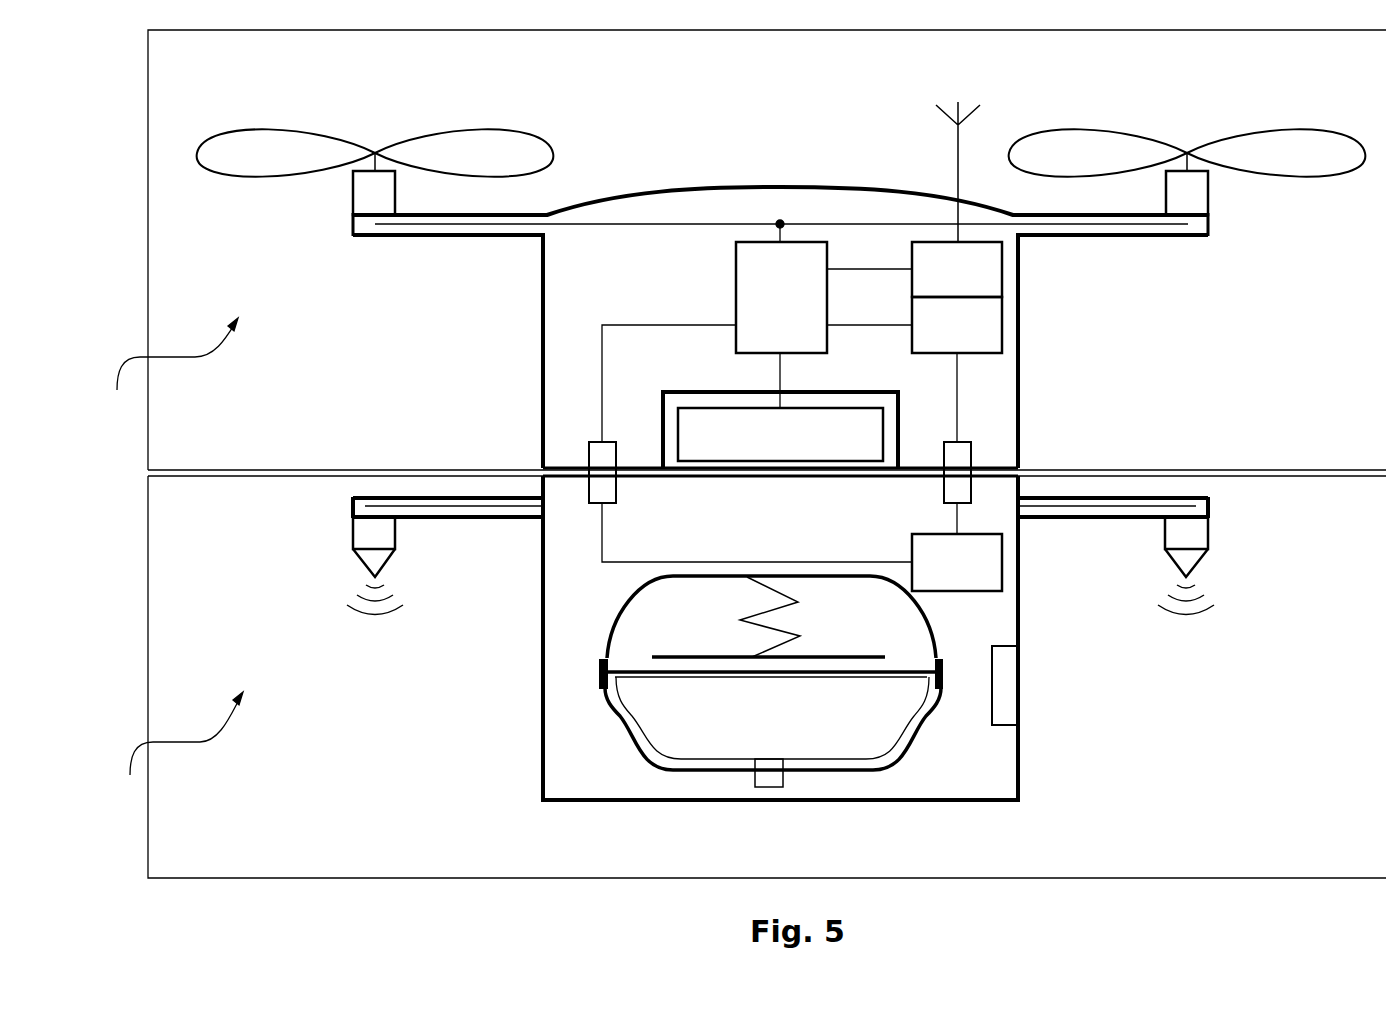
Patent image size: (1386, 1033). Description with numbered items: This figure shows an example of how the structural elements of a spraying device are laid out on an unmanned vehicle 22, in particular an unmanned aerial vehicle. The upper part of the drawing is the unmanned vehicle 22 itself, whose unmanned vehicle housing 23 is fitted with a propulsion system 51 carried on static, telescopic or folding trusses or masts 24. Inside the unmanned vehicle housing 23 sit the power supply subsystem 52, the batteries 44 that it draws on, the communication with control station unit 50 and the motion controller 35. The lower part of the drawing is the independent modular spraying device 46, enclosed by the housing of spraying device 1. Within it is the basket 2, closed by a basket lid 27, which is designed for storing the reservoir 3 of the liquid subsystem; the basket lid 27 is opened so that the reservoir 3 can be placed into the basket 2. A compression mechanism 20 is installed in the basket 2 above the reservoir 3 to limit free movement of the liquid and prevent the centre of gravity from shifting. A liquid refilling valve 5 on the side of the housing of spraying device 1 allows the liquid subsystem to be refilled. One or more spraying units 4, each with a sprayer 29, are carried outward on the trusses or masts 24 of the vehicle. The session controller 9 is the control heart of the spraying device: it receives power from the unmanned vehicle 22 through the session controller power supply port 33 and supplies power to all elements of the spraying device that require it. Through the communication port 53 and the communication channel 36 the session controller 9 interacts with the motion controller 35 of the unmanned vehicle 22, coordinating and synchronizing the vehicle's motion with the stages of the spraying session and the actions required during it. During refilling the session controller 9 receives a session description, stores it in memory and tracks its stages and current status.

The housing of spraying device 1 is at (573, 800).
The basket 2 is at (623, 723).
The reservoir 3 is at (770, 720).
The spraying unit 4 is at (353, 538).
The liquid refilling valve 5 is at (992, 725).
The session controller 9 is at (802, 547).
The compression mechanism 20 is at (752, 657).
The unmanned vehicle 22 is at (155, 370).
The unmanned vehicle housing 23 is at (780, 186).
The static, telescopic or folding trusses or masts 24 is at (510, 519).
The basket lid 27 is at (601, 660).
The sprayer 29 is at (363, 563).
The session controller power supply port 33 is at (616, 503).
The motion controller 35 is at (914, 325).
The communication channel 36 is at (955, 512).
The batteries 44 is at (780, 430).
The modular spraying device A 46 is at (157, 749).
The communication with control station unit 50 is at (914, 199).
The propulsion system 51 is at (375, 153).
The power supply subsystem 52 is at (714, 342).
The communication port 53 is at (944, 444).